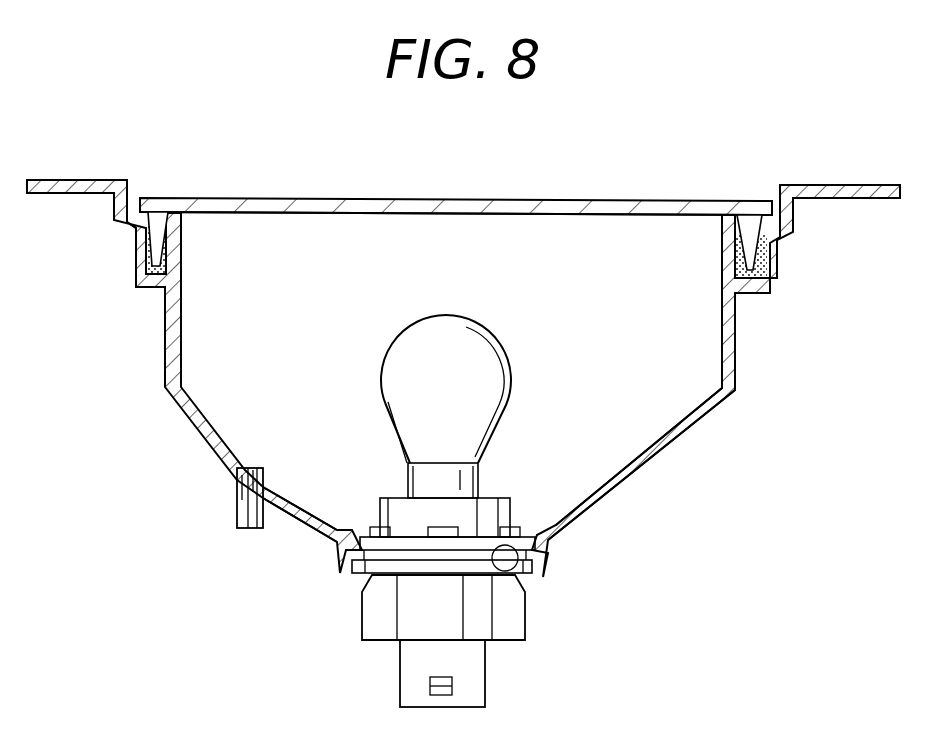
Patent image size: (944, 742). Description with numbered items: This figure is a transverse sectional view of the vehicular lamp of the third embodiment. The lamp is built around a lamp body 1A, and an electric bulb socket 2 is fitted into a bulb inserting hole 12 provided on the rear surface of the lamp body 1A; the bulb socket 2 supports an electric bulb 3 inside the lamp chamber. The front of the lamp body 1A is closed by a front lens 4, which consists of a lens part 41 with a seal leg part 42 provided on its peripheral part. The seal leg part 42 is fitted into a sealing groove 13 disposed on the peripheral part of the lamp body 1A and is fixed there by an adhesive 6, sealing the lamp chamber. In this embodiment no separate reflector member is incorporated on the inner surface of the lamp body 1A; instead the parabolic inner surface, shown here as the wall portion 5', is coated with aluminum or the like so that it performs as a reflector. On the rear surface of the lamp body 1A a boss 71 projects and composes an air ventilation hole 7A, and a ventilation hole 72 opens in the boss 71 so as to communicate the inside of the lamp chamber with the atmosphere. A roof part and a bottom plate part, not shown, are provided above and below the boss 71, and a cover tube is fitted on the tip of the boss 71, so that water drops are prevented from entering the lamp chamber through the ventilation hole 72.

The lamp body 1A is at (737, 366).
The electric bulb socket 2 is at (420, 622).
The electric bulb 3 is at (417, 355).
The front lens 4 is at (610, 196).
The lens part 41 is at (288, 203).
The seal leg part 42 is at (178, 203).
The housing wall portion 5' is at (668, 464).
The adhesive 6 is at (140, 273).
The air ventilation hole 7A is at (236, 500).
The bulb inserting hole 12 is at (515, 578).
The sealing groove 13 is at (138, 290).
The boss 71 is at (266, 530).
The ventilation hole 72 is at (262, 480).